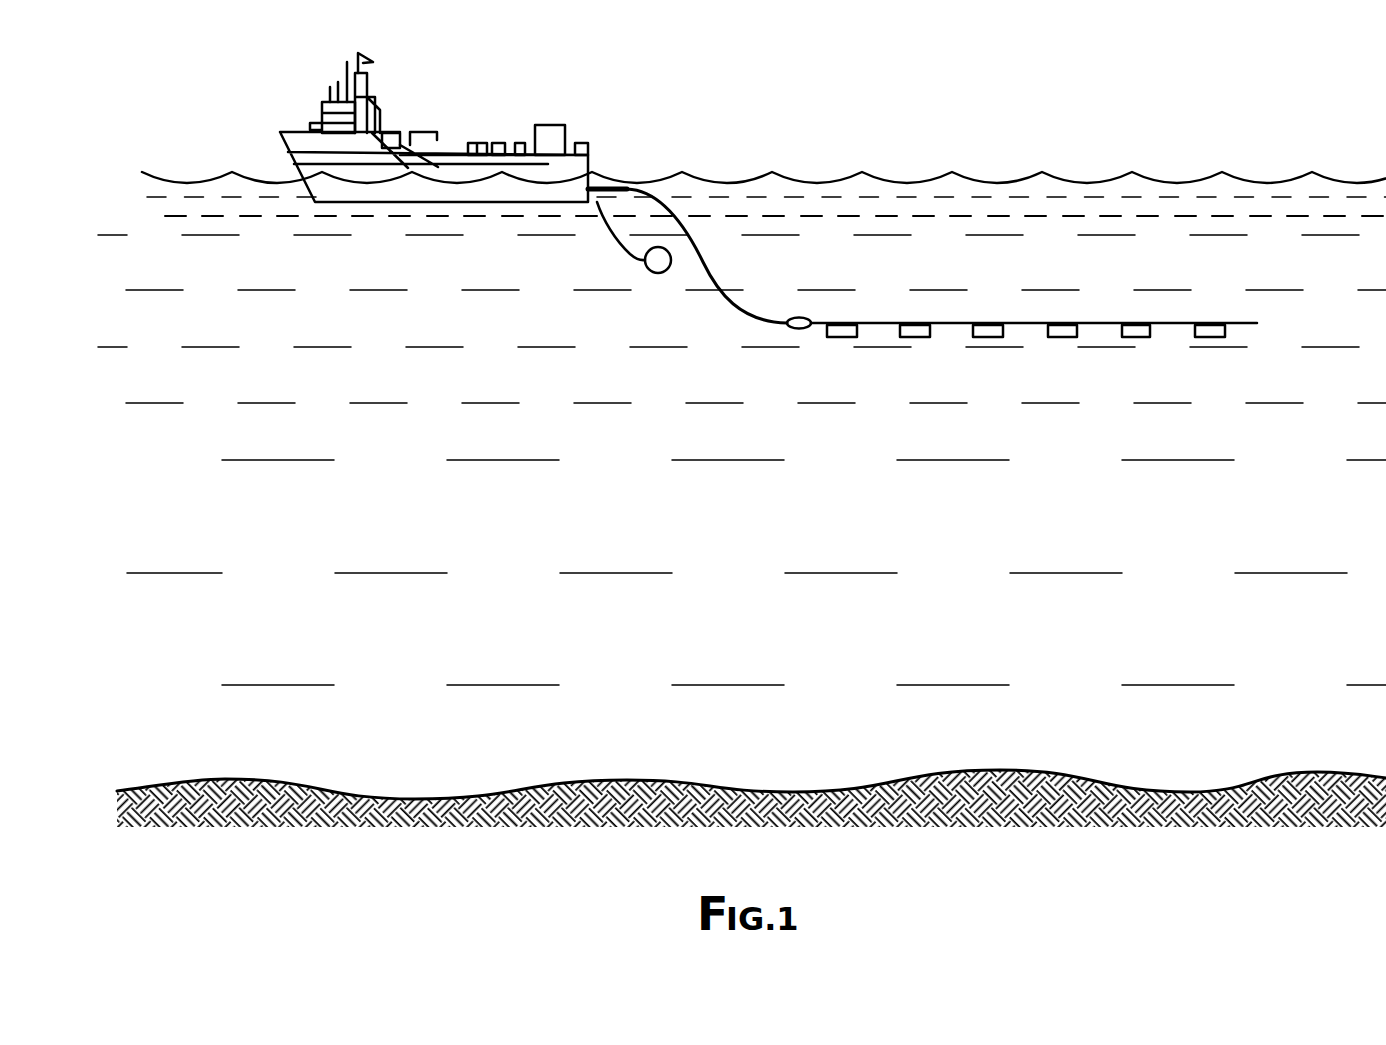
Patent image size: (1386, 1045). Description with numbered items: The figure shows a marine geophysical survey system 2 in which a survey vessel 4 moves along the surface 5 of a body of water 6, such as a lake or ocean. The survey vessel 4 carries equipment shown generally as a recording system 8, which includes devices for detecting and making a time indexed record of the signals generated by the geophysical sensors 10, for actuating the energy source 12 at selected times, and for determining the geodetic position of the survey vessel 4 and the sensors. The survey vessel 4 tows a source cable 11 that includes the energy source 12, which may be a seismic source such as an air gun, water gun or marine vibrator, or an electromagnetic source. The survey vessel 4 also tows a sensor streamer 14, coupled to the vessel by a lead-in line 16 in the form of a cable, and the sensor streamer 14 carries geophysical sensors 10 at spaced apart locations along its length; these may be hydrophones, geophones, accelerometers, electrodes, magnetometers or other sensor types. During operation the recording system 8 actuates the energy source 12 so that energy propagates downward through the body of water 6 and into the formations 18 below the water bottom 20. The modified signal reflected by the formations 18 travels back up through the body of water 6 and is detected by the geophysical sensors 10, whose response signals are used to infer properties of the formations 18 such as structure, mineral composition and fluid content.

The marine geophysical survey system 2 is at (620, 274).
The survey vessel 4 is at (387, 133).
The surface 5 is at (972, 177).
The body of water 6 is at (350, 379).
The recording system 8 is at (552, 127).
The geophysical sensors 10 is at (982, 337).
The source cable 11 is at (618, 235).
The energy source 12 is at (663, 273).
The sensor streamer 14 is at (1176, 320).
The lead-in line 16 is at (713, 270).
The formations 18 is at (1235, 888).
The water bottom 20 is at (1230, 782).